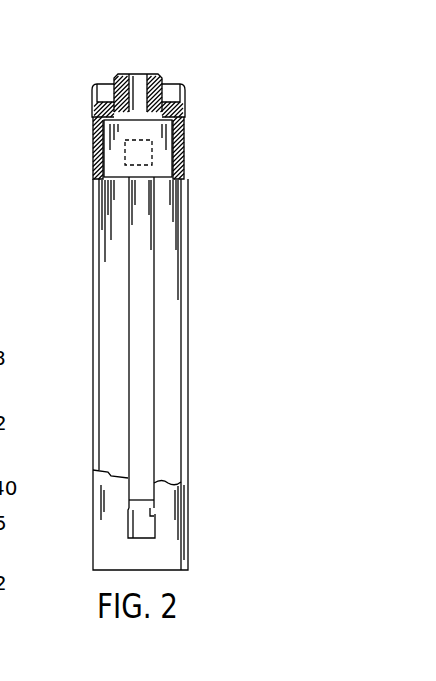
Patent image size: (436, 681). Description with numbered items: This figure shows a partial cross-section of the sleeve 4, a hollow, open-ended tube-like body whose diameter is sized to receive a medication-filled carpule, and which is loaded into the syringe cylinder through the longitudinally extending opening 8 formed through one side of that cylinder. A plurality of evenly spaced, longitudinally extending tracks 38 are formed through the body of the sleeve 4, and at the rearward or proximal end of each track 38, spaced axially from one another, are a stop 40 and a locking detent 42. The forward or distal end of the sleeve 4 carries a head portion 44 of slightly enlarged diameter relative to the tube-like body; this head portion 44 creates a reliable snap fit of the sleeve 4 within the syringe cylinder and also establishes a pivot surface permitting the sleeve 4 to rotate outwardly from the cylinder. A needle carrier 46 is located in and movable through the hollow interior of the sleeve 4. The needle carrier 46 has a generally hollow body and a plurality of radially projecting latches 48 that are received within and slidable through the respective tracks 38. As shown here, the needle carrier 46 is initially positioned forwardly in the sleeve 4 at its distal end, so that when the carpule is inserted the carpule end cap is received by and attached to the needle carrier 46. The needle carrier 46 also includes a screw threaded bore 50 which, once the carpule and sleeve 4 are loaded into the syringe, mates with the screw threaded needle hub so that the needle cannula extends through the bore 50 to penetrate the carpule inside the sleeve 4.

The sleeve 4 is at (213, 303).
The longitudinally extending opening 8 is at (92, 153).
The track 38 is at (143, 252).
The stop 40 is at (140, 539).
The locking detent 42 is at (133, 508).
The head portion 44 is at (185, 104).
The needle carrier 46 is at (93, 98).
The latch 48 is at (186, 150).
The screw threaded bore 50 is at (110, 83).